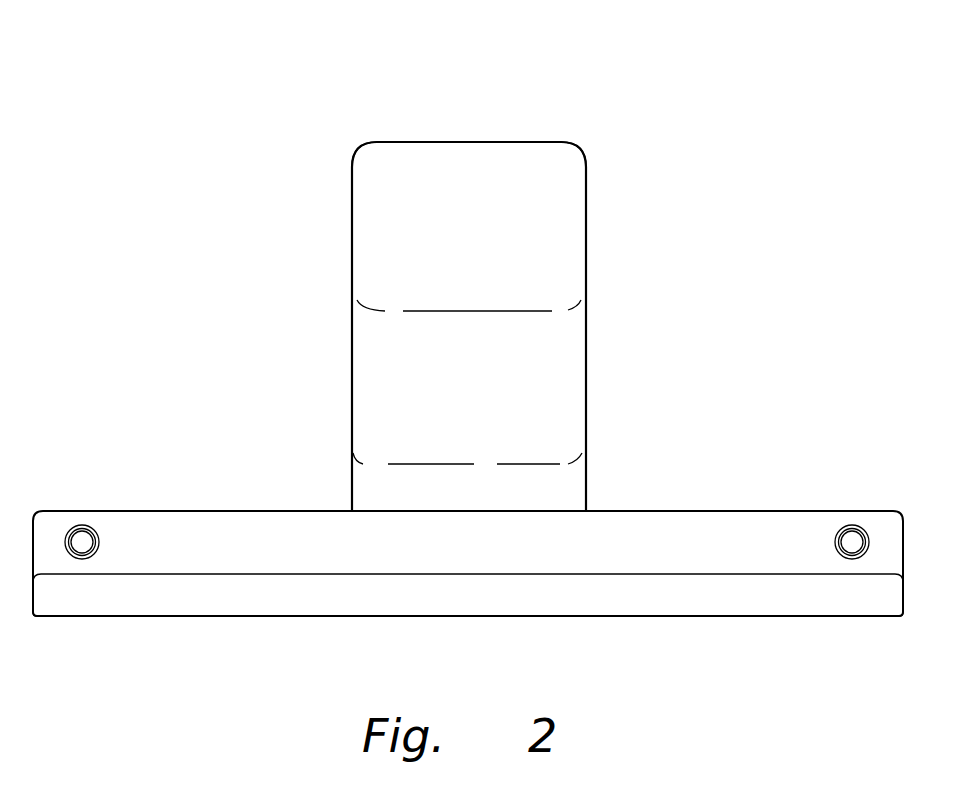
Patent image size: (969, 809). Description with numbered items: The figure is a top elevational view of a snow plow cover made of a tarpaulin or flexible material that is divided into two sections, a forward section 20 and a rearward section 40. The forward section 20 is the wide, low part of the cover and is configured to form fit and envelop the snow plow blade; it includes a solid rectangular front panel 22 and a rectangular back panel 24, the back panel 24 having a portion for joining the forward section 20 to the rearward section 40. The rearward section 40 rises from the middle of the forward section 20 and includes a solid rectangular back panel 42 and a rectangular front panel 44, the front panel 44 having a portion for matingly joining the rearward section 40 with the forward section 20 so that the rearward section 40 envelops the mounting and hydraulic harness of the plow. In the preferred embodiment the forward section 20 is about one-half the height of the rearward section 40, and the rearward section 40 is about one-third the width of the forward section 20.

The forward section 20 is at (704, 642).
The rectangular front panel 22 is at (225, 607).
The rectangular back panel 24 is at (200, 518).
The rearward section 40 is at (456, 104).
The rectangular back panel 42 is at (562, 180).
The rectangular front panel 44 is at (540, 363).